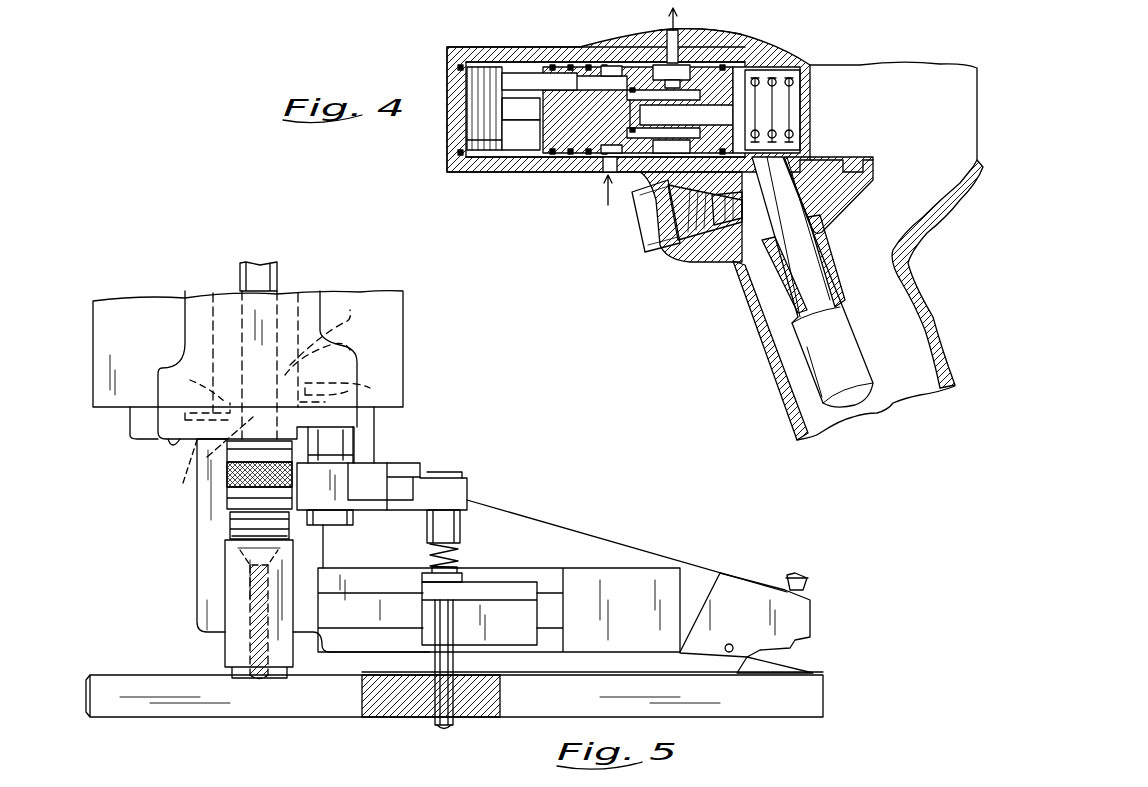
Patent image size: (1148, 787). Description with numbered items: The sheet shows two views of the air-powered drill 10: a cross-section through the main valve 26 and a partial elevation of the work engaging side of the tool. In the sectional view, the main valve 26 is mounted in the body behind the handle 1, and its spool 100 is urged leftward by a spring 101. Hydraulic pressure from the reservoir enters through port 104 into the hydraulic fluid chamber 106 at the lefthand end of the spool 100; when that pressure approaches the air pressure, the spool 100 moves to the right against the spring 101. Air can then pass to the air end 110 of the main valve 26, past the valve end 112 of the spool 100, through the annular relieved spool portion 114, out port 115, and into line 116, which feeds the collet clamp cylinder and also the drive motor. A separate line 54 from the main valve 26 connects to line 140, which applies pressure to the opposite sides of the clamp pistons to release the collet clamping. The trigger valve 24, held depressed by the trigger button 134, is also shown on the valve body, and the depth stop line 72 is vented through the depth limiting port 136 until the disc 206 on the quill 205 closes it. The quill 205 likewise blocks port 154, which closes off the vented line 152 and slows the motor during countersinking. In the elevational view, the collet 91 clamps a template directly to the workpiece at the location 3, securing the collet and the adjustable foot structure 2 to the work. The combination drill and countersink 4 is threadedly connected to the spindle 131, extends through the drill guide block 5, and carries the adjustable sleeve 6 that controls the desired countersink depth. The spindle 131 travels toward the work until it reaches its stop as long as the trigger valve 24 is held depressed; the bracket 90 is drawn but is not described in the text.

In FIG. 4, the handle 1 is at (770, 367).
In FIG. 5, the adjustable foot structure 2 is at (746, 590).
In FIG. 5, the template clamping location 3 is at (427, 665).
In FIG. 5, the combination drill and countersink 4 is at (252, 602).
In FIG. 5, the drill guide block 5 is at (238, 640).
In FIG. 5, the adjustable sleeve 6 is at (227, 511).
In FIG. 5, the air-powered drill 10 is at (167, 302).
In FIG. 4, the trigger valve 24 is at (728, 213).
In FIG. 4, the main valve 26 is at (515, 160).
In FIG. 4, the line 54 is at (605, 203).
In FIG. 5, the depth stop line 72 is at (185, 458).
In FIG. 5, the bracket 90 is at (337, 447).
In FIG. 5, the collet 91 is at (455, 663).
In FIG. 4, the spool 100 is at (544, 67).
In FIG. 4, the spring 101 is at (775, 98).
In FIG. 4, the port 104 is at (477, 62).
In FIG. 4, the hydraulic fluid chamber 106 is at (470, 90).
In FIG. 4, the air end 110 is at (800, 63).
In FIG. 4, the valve end 112 is at (760, 70).
In FIG. 4, the annular relieved spool portion 114 is at (622, 64).
In FIG. 4, the port 115 is at (693, 62).
In FIG. 4, the line 116 is at (668, 30).
In FIG. 5, the spindle 131 is at (268, 272).
In FIG. 4, the trigger button 134 is at (650, 218).
In FIG. 5, the depth limiting port 136 is at (227, 408).
In FIG. 4, the line 140 is at (704, 4).
In FIG. 5, the vented line 152 is at (343, 394).
In FIG. 5, the port 154 is at (337, 364).
In FIG. 5, the quill 205 is at (333, 337).
In FIG. 5, the disc 206 is at (227, 442).